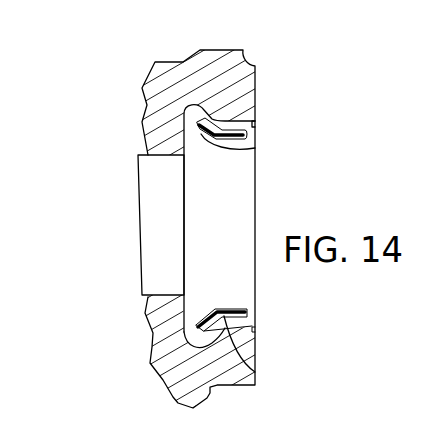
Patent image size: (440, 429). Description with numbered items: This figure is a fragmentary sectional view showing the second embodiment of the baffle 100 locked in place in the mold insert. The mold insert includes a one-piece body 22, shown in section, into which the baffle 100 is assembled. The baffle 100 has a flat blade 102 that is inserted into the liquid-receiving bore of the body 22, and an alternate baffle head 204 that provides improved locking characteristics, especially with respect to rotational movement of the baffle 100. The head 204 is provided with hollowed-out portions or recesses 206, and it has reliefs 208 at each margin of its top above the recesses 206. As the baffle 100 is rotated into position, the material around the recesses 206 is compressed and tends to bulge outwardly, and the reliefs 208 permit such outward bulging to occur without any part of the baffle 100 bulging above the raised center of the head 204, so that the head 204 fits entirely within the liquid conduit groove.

The one-piece body 22 is at (172, 77).
The baffle 100 is at (195, 237).
The flat blade 102 is at (148, 243).
The baffle head 204 is at (230, 200).
The recesses 206 is at (255, 150).
The reliefs 208 is at (255, 122).